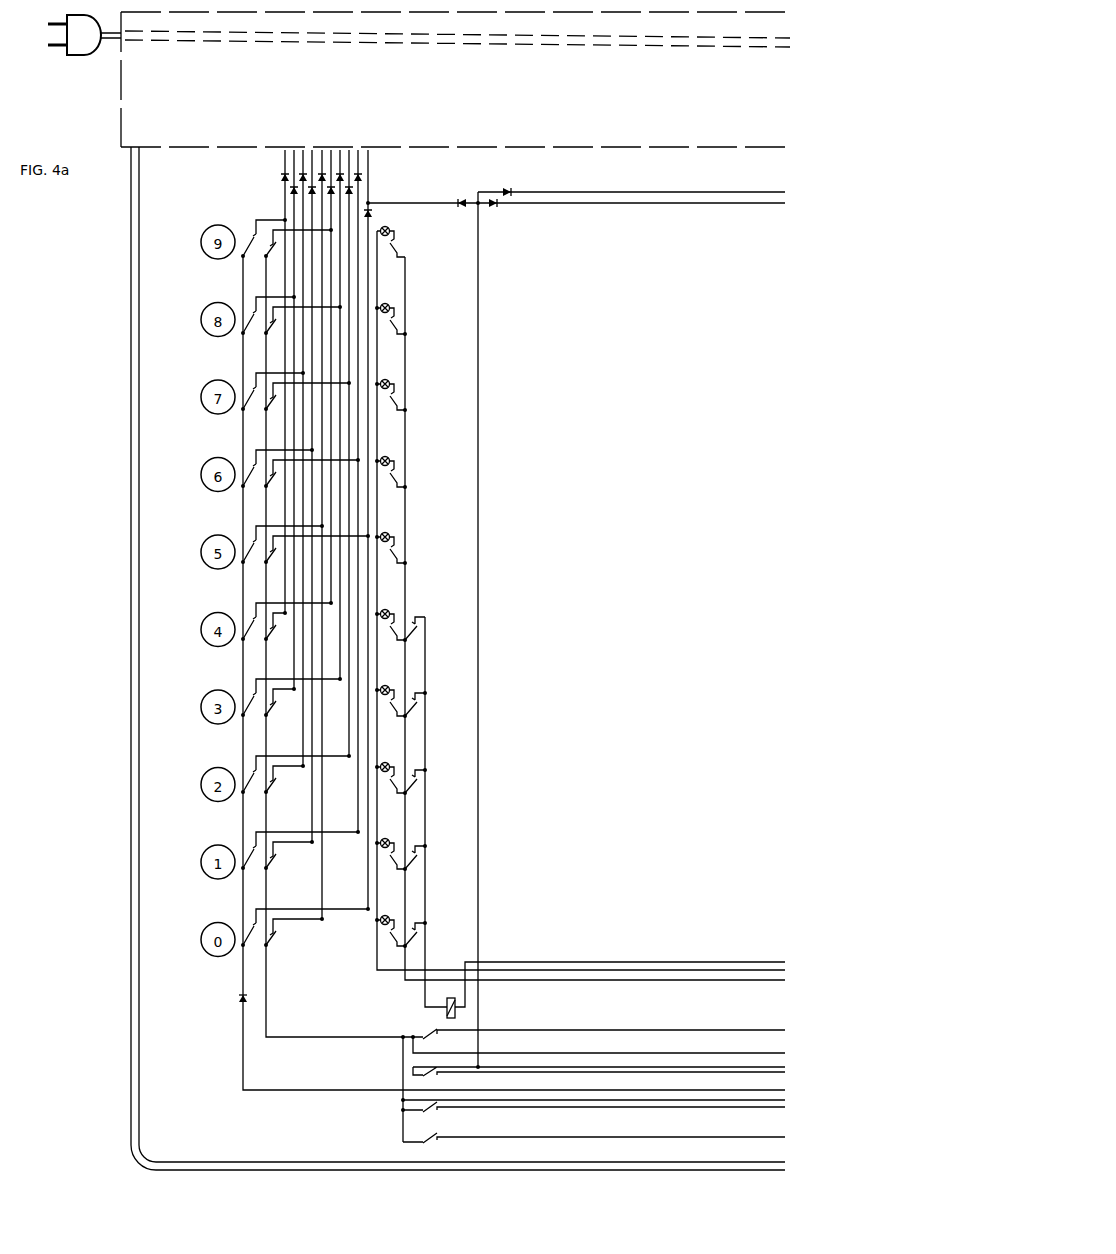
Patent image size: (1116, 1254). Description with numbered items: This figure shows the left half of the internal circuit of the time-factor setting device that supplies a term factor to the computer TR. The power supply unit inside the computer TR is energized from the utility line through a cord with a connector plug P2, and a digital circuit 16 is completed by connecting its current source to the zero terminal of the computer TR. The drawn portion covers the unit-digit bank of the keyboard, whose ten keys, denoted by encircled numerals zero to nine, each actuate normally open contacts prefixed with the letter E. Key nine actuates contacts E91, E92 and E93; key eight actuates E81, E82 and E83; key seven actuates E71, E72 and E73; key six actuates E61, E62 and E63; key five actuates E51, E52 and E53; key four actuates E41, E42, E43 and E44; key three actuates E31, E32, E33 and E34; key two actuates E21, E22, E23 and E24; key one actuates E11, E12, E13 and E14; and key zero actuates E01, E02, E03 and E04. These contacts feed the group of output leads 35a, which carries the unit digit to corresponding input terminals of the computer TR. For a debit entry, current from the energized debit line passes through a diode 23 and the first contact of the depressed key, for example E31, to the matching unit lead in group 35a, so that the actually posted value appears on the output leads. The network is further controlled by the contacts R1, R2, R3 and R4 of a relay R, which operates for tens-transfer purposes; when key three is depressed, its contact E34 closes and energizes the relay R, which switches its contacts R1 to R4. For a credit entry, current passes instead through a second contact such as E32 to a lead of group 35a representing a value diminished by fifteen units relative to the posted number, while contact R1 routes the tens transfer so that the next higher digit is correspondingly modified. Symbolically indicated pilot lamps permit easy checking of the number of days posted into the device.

The connector plug P2 is at (76, 55).
The computer TR is at (485, 176).
The digital circuit 16 is at (130, 698).
The group of output leads 35a is at (414, 188).
The diode 23 is at (229, 999).
The relay R is at (449, 999).
The relay contact R1 is at (593, 1034).
The relay contact R2 is at (599, 1079).
The relay contact R3 is at (593, 1115).
The relay contact R4 is at (594, 1147).
The unit-key contact E91 is at (264, 253).
The unit-key contact E92 is at (298, 258).
The unit-key contact E93 is at (391, 258).
The unit-key contact E81 is at (268, 330).
The unit-key contact E82 is at (303, 335).
The unit-key contact E83 is at (391, 335).
The unit-key contact E71 is at (273, 406).
The unit-key contact E72 is at (307, 411).
The unit-key contact E73 is at (391, 411).
The unit-key contact E61 is at (277, 483).
The unit-key contact E62 is at (312, 488).
The unit-key contact E63 is at (391, 488).
The unit-key contact E51 is at (282, 559).
The unit-key contact E52 is at (317, 564).
The unit-key contact E53 is at (391, 564).
The unit-key contact E41 is at (287, 636).
The unit-key contact E42 is at (275, 641).
The unit-key contact E43 is at (391, 641).
The unit-key contact E44 is at (424, 633).
The unit-key contact E31 is at (291, 712).
The unit-key contact E32 is at (280, 717).
The unit-key contact E33 is at (391, 717).
The unit-key contact E34 is at (424, 708).
The unit-key contact E21 is at (296, 789).
The unit-key contact E22 is at (284, 794).
The unit-key contact E23 is at (391, 794).
The unit-key contact E24 is at (424, 785).
The unit-key contact E11 is at (300, 865).
The unit-key contact E12 is at (289, 870).
The unit-key contact E13 is at (391, 870).
The unit-key contact E14 is at (424, 861).
The unit-key contact E01 is at (305, 942).
The unit-key contact E02 is at (294, 947).
The unit-key contact E03 is at (391, 940).
The unit-key contact E04 is at (420, 935).